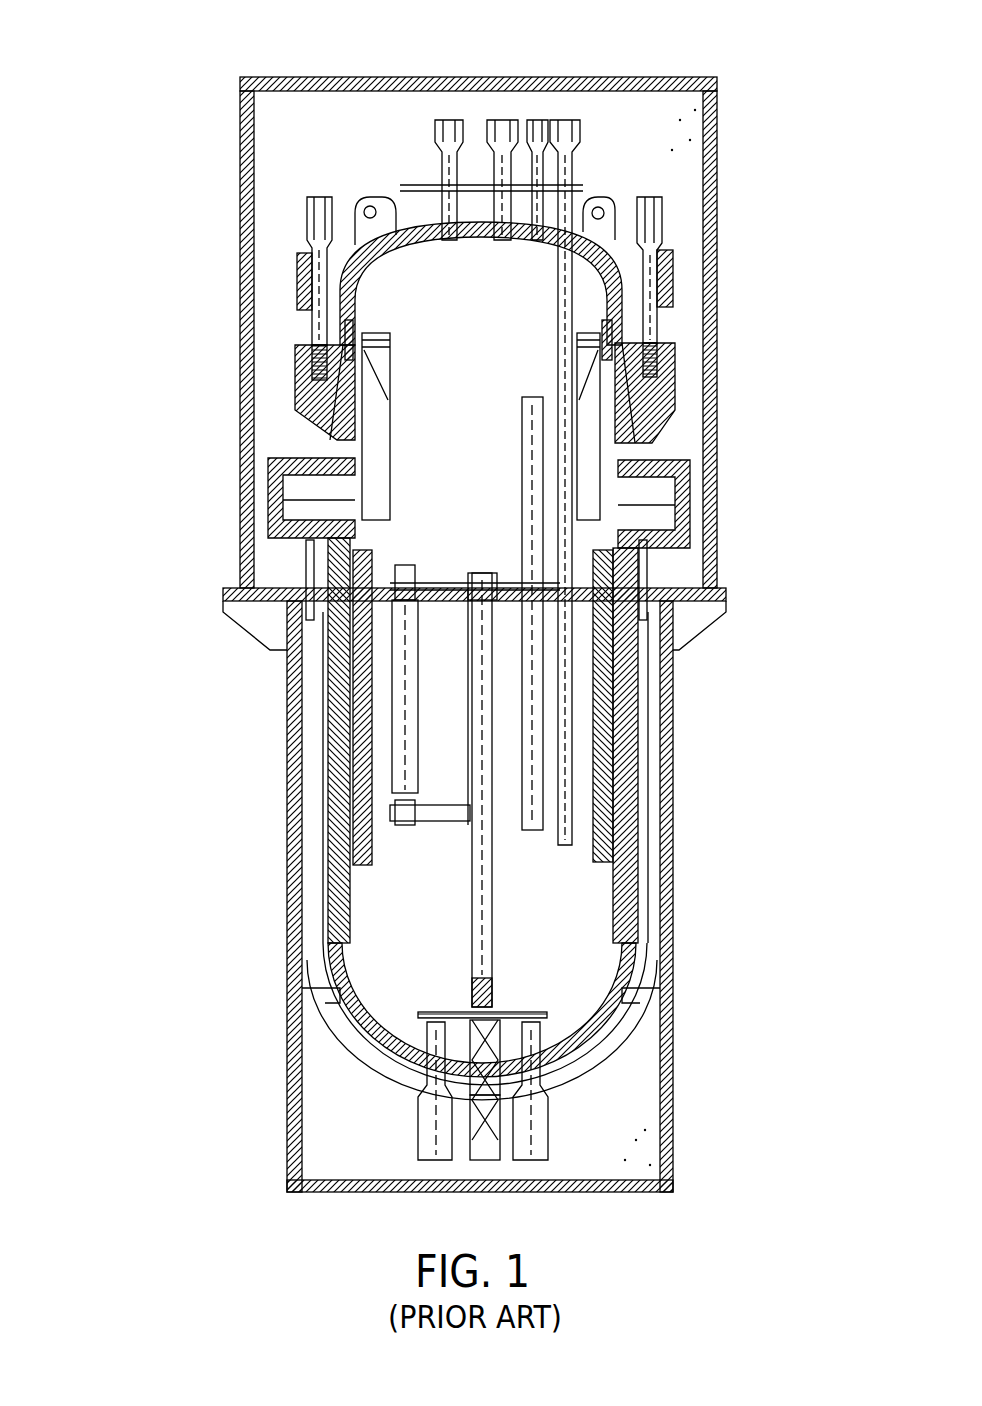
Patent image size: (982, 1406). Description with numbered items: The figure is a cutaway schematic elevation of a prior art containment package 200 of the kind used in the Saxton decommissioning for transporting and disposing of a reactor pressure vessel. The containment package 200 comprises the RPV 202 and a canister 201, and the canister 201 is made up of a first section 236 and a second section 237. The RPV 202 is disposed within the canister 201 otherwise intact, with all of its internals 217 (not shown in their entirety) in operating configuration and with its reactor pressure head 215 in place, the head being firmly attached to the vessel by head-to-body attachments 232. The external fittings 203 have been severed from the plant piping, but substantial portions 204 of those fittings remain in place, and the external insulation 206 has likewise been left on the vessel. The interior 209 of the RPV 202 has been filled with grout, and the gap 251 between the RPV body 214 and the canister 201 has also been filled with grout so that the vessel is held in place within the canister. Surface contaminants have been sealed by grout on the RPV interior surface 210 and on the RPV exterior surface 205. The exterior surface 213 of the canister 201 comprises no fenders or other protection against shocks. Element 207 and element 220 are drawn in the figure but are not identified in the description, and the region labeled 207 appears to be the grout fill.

The containment package 200 is at (145, 378).
The canister 201 is at (718, 468).
The RPV 202 is at (638, 752).
The external fittings 203 is at (315, 217).
The substantial portions of the fittings 204 is at (555, 1160).
The RPV exterior surface 205 is at (632, 952).
The external insulation 206 is at (647, 990).
The insulation 207 is at (683, 191).
The interior 209 is at (587, 927).
The RPV interior surface 210 is at (330, 1078).
The exterior surface 213 is at (316, 77).
The RPV body 214 is at (648, 668).
The reactor pressure head 215 is at (415, 218).
The internals 217 is at (580, 768).
The fastening bracket 220 is at (445, 205).
The head-to-body attachments 232 is at (680, 298).
The first section 236 is at (287, 706).
The second section 237 is at (240, 100).
The gap 251 is at (683, 131).